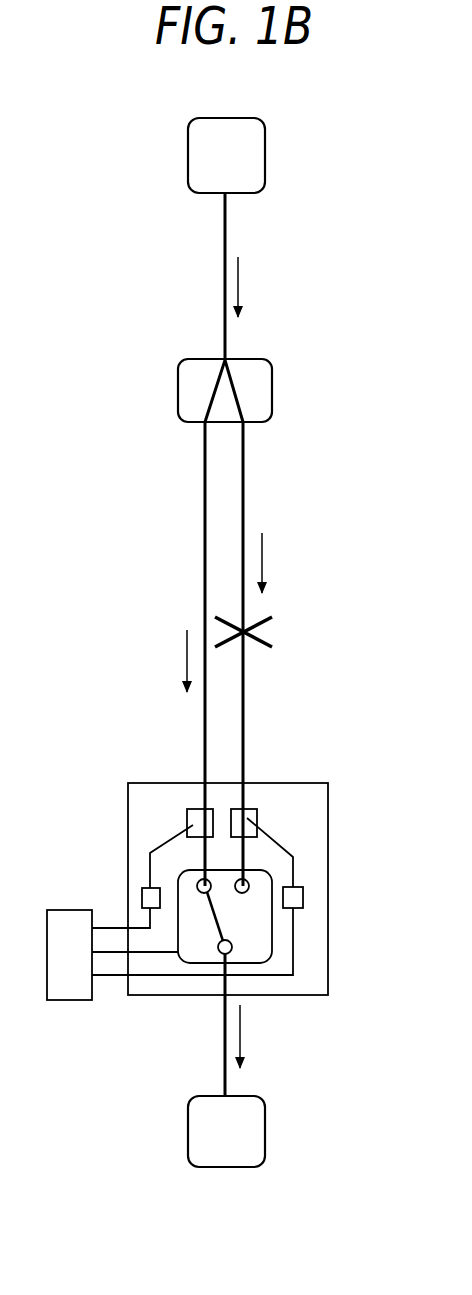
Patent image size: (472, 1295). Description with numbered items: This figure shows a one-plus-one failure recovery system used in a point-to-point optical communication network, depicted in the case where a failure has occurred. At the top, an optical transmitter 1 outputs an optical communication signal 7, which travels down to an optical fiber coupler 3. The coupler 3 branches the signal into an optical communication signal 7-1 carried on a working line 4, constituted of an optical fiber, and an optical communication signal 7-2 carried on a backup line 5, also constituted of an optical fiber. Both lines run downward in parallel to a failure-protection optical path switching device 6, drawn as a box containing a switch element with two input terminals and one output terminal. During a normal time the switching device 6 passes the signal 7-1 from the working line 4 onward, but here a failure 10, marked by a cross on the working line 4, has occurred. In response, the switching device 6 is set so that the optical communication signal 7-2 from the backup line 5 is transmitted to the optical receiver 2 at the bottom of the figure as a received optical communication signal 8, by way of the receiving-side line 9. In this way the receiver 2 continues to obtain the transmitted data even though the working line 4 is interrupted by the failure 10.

The optical transmitter 1 is at (255, 160).
The optical receiver 2 is at (255, 1132).
The optical fiber coupler 3 is at (265, 390).
The working line 4 is at (245, 470).
The backup line 5 is at (205, 481).
The failure-protection optical path switching device 6 is at (328, 975).
The optical communication signal 7 is at (240, 278).
The optical communication signal for the working line 7-1 is at (264, 556).
The optical communication signal for the backup line 7-2 is at (186, 651).
The received optical communication signal 8 is at (242, 1032).
The receiving-side line 9 is at (224, 1046).
The failure 10 is at (262, 645).